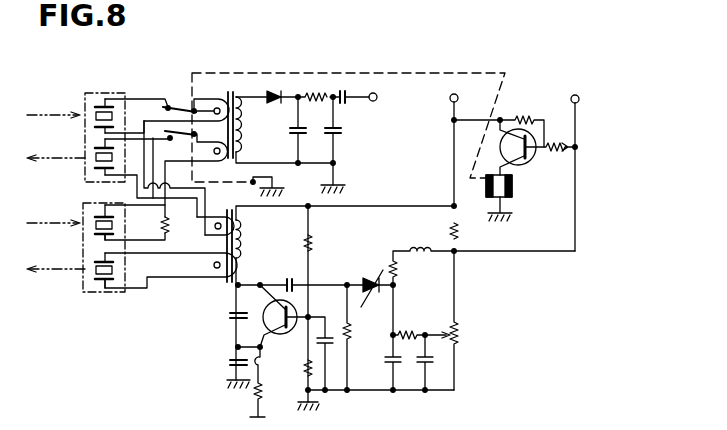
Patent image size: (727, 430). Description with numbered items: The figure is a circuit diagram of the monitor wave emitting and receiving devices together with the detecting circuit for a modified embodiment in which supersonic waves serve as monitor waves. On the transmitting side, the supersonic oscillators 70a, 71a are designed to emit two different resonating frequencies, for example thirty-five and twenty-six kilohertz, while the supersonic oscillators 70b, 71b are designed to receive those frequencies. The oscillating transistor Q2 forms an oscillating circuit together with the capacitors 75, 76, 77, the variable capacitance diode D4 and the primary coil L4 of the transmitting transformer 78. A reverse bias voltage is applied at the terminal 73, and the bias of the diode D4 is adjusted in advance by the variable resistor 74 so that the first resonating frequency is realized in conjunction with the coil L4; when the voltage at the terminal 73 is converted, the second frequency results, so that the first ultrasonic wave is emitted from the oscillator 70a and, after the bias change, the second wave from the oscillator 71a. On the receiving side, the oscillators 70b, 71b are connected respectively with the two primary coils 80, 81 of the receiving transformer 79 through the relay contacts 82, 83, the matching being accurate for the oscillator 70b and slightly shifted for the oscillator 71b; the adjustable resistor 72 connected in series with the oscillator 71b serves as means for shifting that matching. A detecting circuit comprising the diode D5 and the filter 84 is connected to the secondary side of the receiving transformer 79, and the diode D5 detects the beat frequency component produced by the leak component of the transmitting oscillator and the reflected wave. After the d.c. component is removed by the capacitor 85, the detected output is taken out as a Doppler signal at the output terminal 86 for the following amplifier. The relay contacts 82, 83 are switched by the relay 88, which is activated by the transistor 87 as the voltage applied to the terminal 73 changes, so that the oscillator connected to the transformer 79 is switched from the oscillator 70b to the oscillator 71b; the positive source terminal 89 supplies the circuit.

The supersonic oscillator 70a is at (97, 163).
The supersonic oscillator 70b is at (97, 117).
The supersonic oscillator 71a is at (97, 273).
The supersonic oscillator 71b is at (97, 228).
The adjustable resistor 72 is at (163, 225).
The terminal 73 is at (579, 99).
The variable resistor 74 is at (458, 348).
The capacitor 75 is at (290, 282).
The capacitor 76 is at (230, 313).
The capacitor 77 is at (230, 360).
The transmitting transformer 78 is at (227, 277).
The receiving transformer 79 is at (231, 95).
The primary coil 80 is at (207, 100).
The primary coil 81 is at (214, 153).
The relay contact 82 is at (184, 111).
The relay contact 83 is at (172, 141).
The filter 84 is at (315, 123).
The capacitor 85 is at (347, 103).
The output terminal 86 is at (379, 101).
The transistor 87 is at (531, 160).
The relay 88 is at (513, 196).
The positive source terminal 89 is at (458, 98).
The diode D5 is at (276, 100).
The variable capacitance diode D4 is at (377, 280).
The primary coil L4 is at (244, 245).
The oscillating transistor Q2 is at (283, 326).